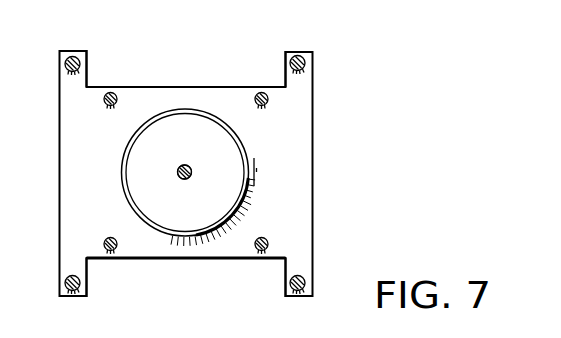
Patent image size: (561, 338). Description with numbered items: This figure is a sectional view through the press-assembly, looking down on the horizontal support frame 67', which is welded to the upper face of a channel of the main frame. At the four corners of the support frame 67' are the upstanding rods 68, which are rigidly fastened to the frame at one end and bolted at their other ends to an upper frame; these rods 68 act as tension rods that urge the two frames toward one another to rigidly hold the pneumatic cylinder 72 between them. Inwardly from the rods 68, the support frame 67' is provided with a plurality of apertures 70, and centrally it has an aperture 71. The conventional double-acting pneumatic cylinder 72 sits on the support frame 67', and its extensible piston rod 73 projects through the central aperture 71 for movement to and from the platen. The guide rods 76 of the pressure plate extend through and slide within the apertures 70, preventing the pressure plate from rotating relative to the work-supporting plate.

The horizontal support frame 67' is at (207, 173).
The upstanding rods 68 is at (104, 103).
The apertures 70 is at (84, 62).
The aperture 71 is at (193, 169).
The double-acting pneumatic cylinder 72 is at (124, 167).
The piston rod 73 is at (179, 177).
The guide rods 76 is at (65, 65).